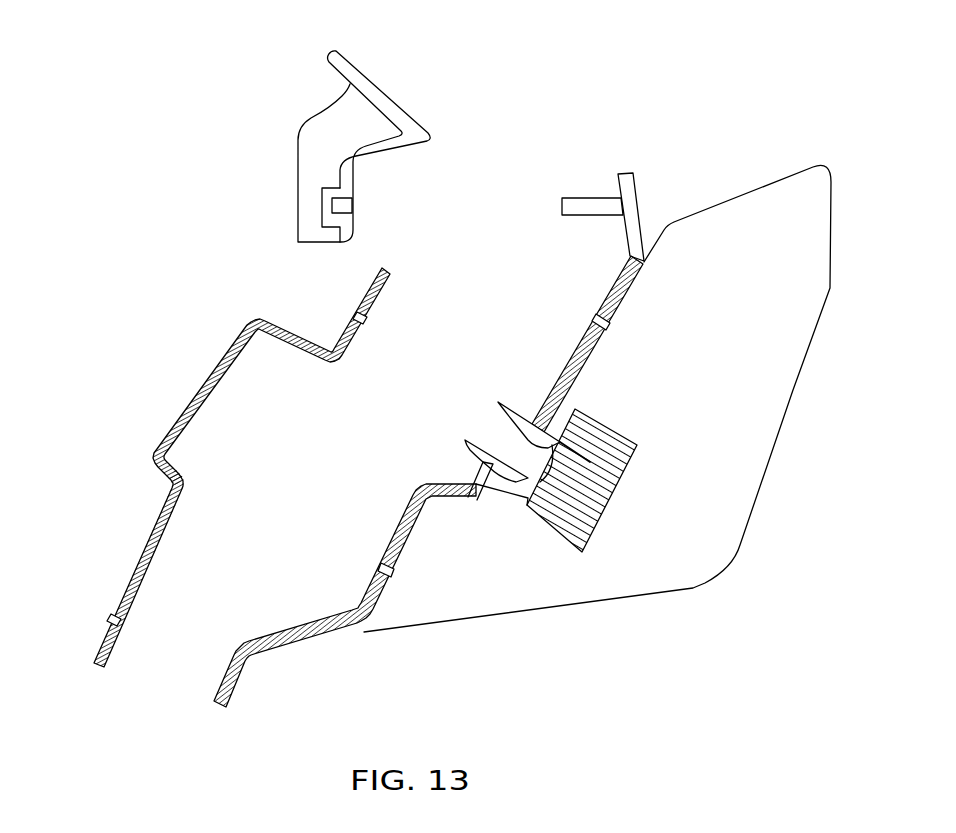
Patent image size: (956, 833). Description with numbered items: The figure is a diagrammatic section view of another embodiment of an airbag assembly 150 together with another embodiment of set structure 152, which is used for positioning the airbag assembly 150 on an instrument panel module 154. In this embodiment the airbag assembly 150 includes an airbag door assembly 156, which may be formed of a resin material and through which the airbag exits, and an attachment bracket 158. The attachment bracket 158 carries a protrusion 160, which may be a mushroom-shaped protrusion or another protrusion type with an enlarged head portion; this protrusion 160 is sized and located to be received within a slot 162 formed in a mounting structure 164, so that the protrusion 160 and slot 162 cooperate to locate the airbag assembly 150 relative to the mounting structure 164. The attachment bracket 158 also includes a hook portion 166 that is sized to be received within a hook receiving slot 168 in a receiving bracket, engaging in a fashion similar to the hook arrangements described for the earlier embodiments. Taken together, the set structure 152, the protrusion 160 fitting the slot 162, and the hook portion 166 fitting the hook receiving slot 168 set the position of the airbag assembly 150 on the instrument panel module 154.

The airbag assembly 150 is at (697, 115).
The set structure 152 is at (514, 97).
The instrument panel module 154 is at (156, 330).
The airbag door assembly 156 is at (767, 452).
The attachment bracket 158 is at (594, 357).
The protrusion 160 is at (575, 218).
The slot 162 is at (353, 204).
The mounting structure 164 is at (308, 128).
The hook portion 166 is at (284, 650).
The hook receiving slot 168 is at (112, 630).